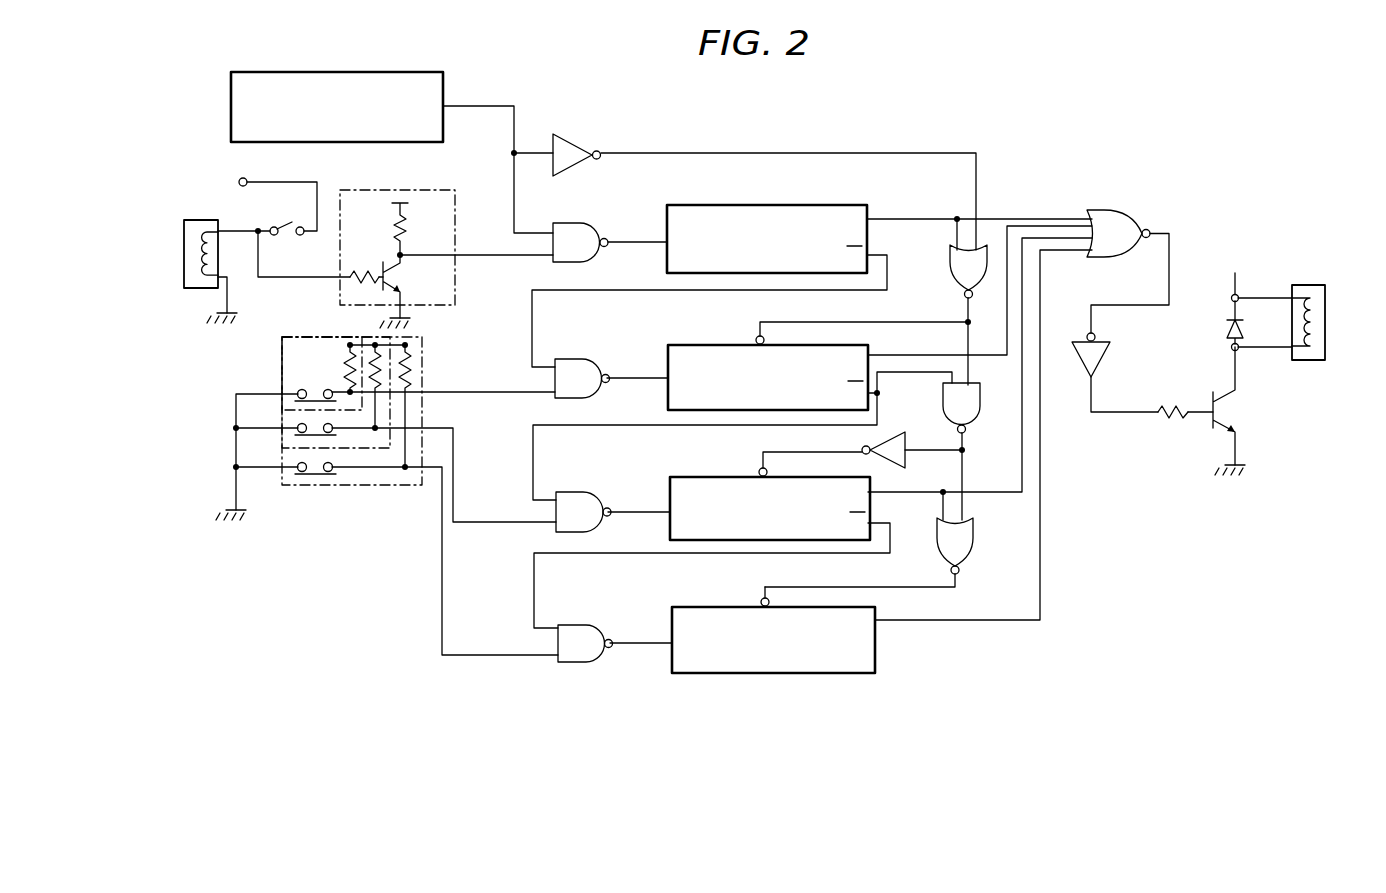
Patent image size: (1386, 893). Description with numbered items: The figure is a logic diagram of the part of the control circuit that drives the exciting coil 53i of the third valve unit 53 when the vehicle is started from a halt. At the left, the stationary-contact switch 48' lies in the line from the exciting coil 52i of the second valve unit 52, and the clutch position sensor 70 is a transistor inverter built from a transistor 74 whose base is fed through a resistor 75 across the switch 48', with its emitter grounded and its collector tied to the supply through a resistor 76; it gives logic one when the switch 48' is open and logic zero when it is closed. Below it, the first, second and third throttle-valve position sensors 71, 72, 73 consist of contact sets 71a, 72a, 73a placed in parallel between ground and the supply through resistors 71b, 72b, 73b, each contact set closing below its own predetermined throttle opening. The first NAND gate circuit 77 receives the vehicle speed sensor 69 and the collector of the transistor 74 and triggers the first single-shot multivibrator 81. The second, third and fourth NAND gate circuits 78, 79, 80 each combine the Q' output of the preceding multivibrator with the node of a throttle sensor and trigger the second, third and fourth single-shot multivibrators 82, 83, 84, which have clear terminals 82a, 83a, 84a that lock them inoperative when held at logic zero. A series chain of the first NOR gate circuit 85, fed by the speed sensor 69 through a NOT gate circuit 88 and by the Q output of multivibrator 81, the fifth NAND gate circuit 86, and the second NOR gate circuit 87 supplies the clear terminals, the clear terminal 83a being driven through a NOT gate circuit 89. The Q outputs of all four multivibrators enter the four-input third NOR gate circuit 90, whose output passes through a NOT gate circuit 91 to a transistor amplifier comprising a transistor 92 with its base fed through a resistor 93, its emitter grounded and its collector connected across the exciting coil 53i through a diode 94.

The vehicle speed sensor 69 is at (374, 72).
The logic NOT gate circuit 88 is at (566, 146).
The first logic NAND gate circuit 77 is at (578, 226).
The second logic NAND gate circuit 78 is at (575, 362).
The third logic NAND gate circuit 79 is at (575, 494).
The fourth logic NAND gate circuit 80 is at (576, 626).
The first single-shot multivibrator 81 is at (716, 206).
The second single-shot multivibrator 82 is at (680, 346).
The clear terminal 82a is at (757, 338).
The third single-shot multivibrator 83 is at (688, 476).
The clear terminal 83a is at (760, 471).
The fourth single-shot multivibrator 84 is at (690, 606).
The clear terminal 84a is at (762, 600).
The first logic NOR gate circuit 85 is at (951, 272).
The fifth logic NAND gate circuit 86 is at (980, 404).
The second logic NOR gate circuit 87 is at (975, 546).
The logic NOT gate circuit 89 is at (910, 432).
The third logic NOR gate circuit 90 is at (1107, 211).
The logic NOT gate circuit 91 is at (1100, 362).
The transistor 92 is at (1226, 417).
The resistor 93 is at (1170, 420).
The diode 94 is at (1228, 332).
The second valve unit 52 is at (208, 213).
The exciting coil 52i is at (200, 281).
The stationary-contact switch 48' is at (278, 206).
The clutch position sensor 70 is at (408, 190).
The transistor 74 is at (398, 282).
The resistor 75 is at (368, 258).
The resistor 76 is at (404, 222).
The first throttle-valve position sensor 71 is at (282, 351).
The contact set 71a is at (316, 392).
The resistor 71b is at (346, 358).
The second throttle-valve position sensor 72 is at (350, 450).
The contact set 72a is at (299, 428).
The resistor 72b is at (378, 360).
The third throttle-valve position sensor 73 is at (384, 488).
The contact set 73a is at (312, 476).
The resistor 73b is at (408, 375).
The third valve unit 53 is at (1306, 280).
The exciting coil 53i is at (1312, 362).